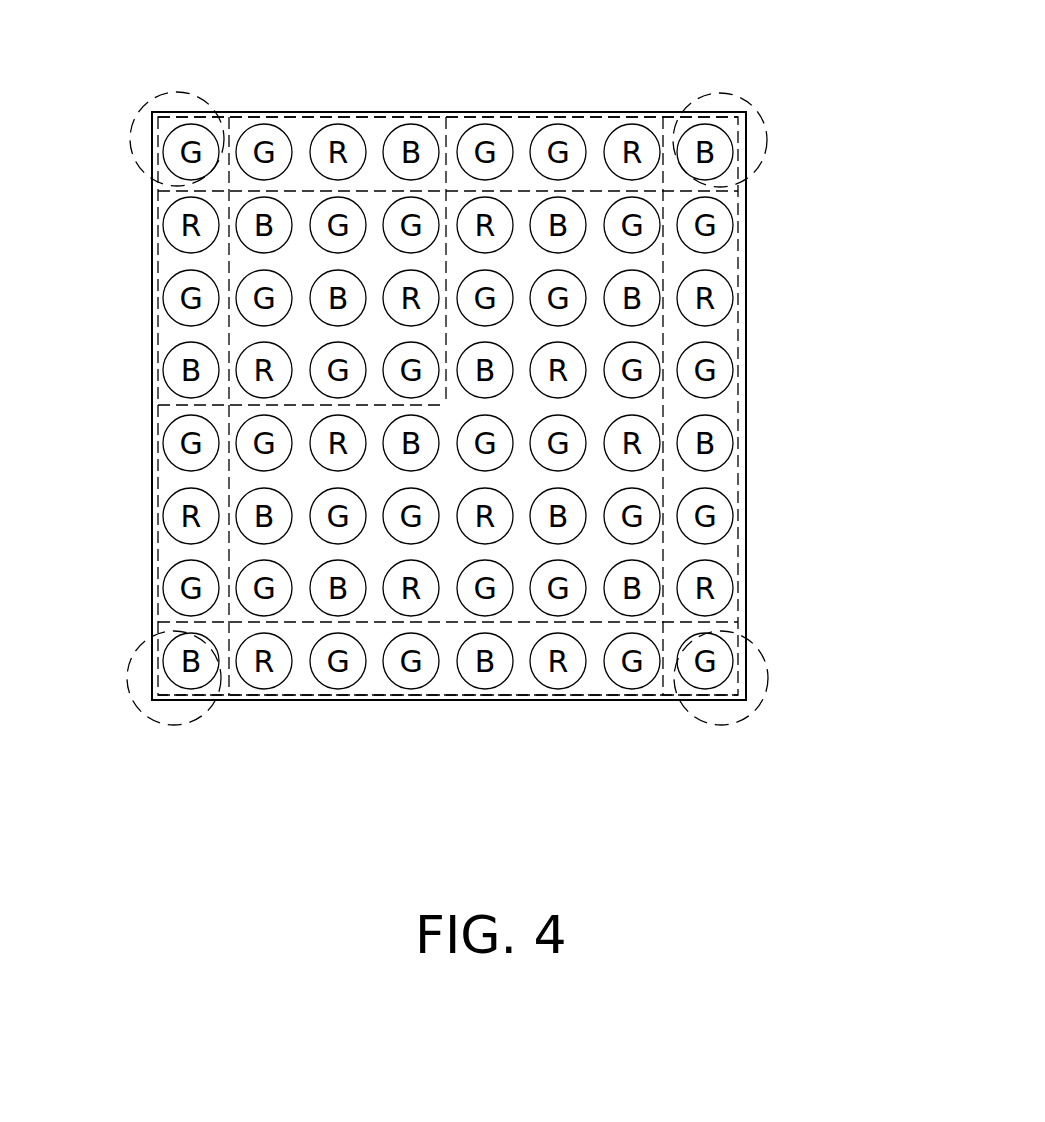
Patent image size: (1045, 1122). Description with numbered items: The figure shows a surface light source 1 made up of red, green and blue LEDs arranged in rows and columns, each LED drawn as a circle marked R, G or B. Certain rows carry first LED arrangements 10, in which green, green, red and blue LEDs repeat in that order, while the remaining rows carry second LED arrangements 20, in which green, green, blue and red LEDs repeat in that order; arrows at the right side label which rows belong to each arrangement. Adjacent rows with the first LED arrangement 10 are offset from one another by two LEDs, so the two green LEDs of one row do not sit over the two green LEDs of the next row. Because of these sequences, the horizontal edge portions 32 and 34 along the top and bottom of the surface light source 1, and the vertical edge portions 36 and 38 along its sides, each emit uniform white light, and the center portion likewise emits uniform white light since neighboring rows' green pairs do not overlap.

The surface light source 1 is at (456, 37).
The first LED arrangement 10 is at (535, 334).
The second LED arrangement 20 is at (535, 479).
The horizontal edge portion 32 is at (545, 114).
The horizontal edge portion 34 is at (450, 701).
The vertical edge portion 36 is at (152, 407).
The vertical edge portion 38 is at (738, 408).